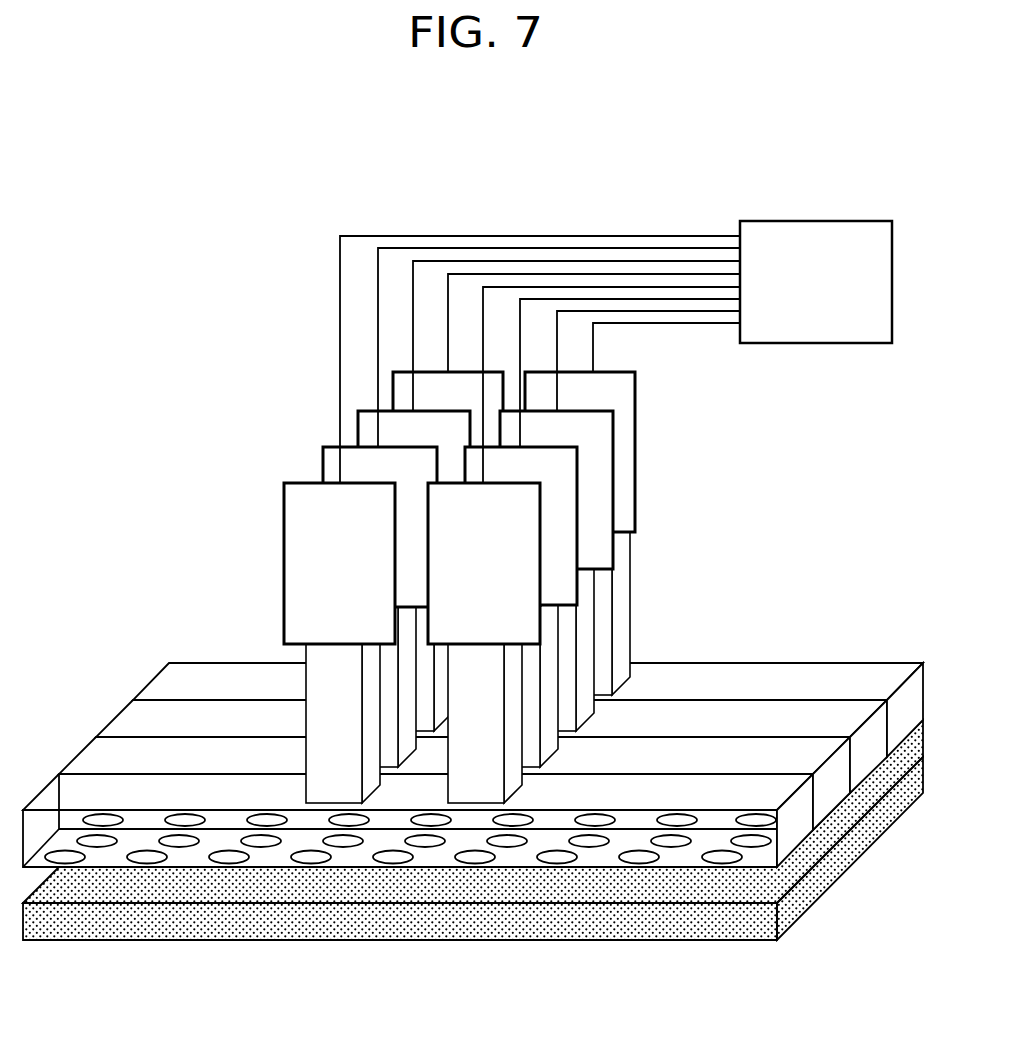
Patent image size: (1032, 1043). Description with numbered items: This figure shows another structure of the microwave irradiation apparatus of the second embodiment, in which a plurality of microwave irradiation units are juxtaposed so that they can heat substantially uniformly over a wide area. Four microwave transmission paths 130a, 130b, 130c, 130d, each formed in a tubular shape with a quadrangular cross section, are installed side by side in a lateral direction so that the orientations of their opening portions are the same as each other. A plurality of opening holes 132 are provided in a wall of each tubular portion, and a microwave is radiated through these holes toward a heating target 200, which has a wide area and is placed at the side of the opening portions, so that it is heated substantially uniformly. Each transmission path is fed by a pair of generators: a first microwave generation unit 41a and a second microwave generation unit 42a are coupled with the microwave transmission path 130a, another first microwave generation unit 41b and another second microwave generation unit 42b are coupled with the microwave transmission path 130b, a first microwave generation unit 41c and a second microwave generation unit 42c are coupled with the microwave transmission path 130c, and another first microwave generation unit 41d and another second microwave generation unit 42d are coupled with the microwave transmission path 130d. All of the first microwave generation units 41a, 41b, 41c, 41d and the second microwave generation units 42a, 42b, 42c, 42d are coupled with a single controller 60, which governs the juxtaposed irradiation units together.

The first microwave generation unit 41a is at (288, 528).
The first microwave generation unit 41b is at (323, 480).
The first microwave generation unit 41c is at (358, 430).
The first microwave generation unit 41d is at (393, 392).
The second microwave generation unit 42a is at (537, 577).
The second microwave generation unit 42b is at (568, 533).
The second microwave generation unit 42c is at (608, 489).
The second microwave generation unit 42d is at (640, 447).
The controller 60 is at (825, 219).
The microwave transmission path 130a is at (660, 787).
The microwave transmission path 130b is at (707, 750).
The microwave transmission path 130c is at (757, 712).
The microwave transmission path 130d is at (807, 675).
The opening holes 132 is at (728, 857).
The heating target 200 is at (767, 930).